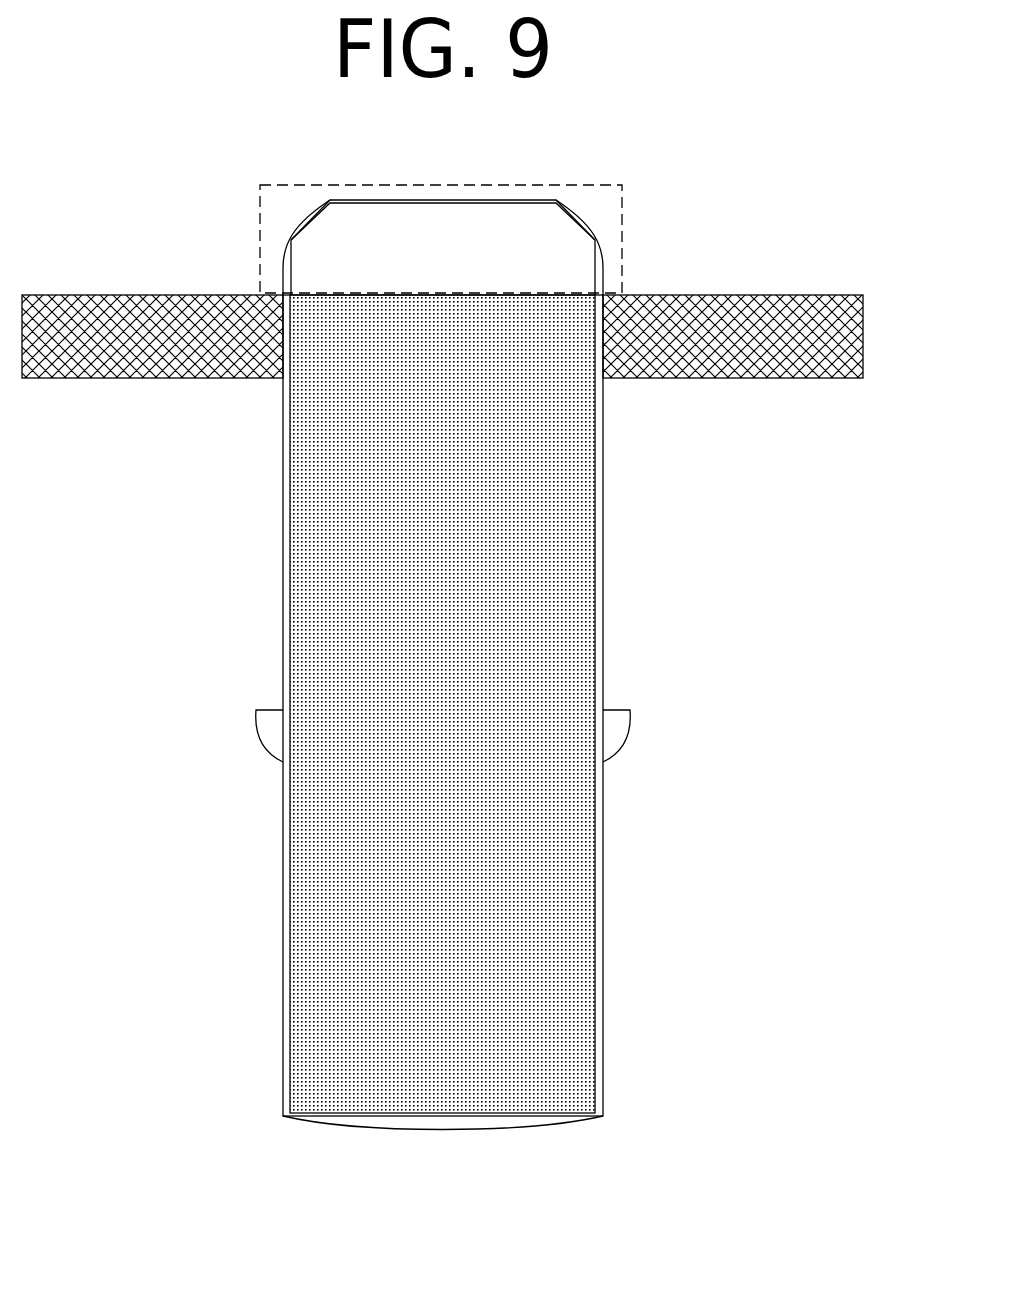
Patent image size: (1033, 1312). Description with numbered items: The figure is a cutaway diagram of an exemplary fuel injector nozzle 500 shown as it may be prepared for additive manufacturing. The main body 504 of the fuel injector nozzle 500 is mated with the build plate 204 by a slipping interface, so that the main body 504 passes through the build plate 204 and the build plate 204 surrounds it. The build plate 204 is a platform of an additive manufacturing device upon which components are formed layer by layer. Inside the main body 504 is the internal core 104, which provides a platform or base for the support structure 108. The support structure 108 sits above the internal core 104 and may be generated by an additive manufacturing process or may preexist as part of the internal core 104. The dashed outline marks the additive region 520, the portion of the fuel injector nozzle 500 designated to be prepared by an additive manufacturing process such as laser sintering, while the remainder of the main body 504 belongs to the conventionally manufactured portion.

The fuel injector nozzle 500 is at (103, 162).
The additive region 520 is at (622, 205).
The build plate 204 is at (122, 295).
The support structure 108 is at (460, 266).
The internal core 104 is at (458, 477).
The main body 504 is at (604, 929).